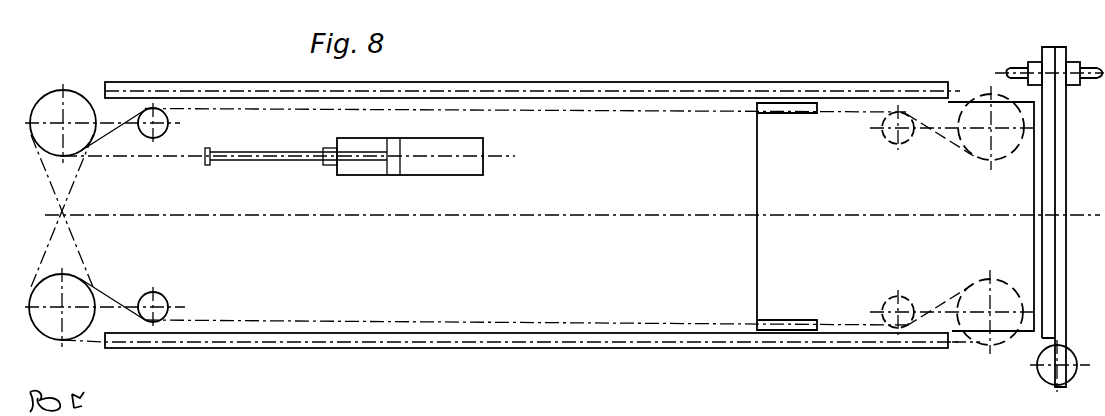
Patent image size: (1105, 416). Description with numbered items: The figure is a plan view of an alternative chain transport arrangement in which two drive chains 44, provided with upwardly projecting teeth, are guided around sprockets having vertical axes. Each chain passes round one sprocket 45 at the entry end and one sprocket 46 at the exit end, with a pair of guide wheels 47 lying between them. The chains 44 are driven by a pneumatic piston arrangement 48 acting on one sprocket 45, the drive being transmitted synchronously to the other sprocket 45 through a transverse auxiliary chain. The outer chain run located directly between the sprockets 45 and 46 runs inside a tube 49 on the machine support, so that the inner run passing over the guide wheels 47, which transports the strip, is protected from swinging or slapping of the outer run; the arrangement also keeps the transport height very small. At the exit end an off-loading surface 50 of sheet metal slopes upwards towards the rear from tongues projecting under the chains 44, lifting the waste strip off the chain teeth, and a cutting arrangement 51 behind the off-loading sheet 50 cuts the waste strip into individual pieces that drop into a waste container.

The drive chains 44 is at (648, 109).
The sprocket at the entry end 45 is at (48, 102).
The sprocket at the exit end 46 is at (986, 97).
The guide wheels 47 is at (166, 128).
The pneumatic piston arrangement 48 is at (447, 176).
The tube 49 is at (503, 82).
The off-loading surface 50 is at (768, 245).
The cutting arrangement 51 is at (1062, 175).